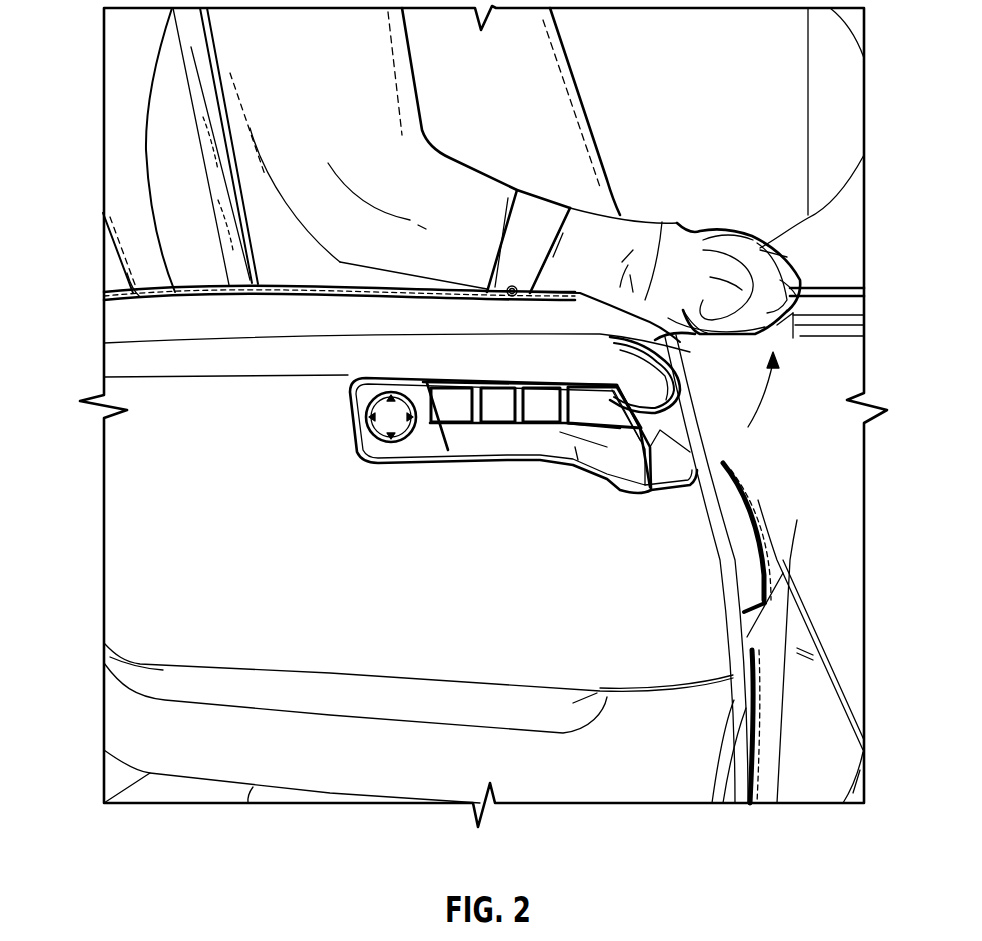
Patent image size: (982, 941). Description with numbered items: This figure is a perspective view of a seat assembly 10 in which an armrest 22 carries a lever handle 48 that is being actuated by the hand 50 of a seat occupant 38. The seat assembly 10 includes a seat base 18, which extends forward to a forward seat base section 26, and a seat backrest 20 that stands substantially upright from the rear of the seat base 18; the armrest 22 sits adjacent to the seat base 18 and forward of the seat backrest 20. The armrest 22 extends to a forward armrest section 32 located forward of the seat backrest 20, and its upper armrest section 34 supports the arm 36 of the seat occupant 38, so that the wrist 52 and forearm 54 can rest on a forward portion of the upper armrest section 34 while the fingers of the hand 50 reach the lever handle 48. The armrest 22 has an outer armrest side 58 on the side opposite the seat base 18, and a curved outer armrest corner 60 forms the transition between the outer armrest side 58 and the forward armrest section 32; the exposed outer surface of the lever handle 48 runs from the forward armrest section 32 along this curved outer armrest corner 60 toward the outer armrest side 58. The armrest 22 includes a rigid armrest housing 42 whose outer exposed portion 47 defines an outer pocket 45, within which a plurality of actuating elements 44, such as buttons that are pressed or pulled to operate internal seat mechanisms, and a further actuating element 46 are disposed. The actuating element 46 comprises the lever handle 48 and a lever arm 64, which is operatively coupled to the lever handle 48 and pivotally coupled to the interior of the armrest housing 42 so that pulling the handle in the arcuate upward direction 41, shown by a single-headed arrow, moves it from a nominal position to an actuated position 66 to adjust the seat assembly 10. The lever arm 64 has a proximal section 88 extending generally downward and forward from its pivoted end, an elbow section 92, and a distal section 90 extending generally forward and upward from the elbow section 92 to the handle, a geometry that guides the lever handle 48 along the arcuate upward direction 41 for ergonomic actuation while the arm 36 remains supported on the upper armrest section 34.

The seat assembly 10 is at (126, 129).
The seat base 18 is at (770, 543).
The seat backrest 20 is at (177, 103).
The armrest 22 is at (265, 358).
The forward seat base section 26 is at (773, 573).
The forward armrest section 32 is at (707, 427).
The upper armrest section 34 is at (283, 283).
The arm 36 is at (587, 227).
The seat occupant 38 is at (519, 192).
The arcuate upward direction 41 is at (768, 395).
The armrest housing 42 is at (681, 486).
The actuating elements 44 is at (500, 413).
The outer pocket 45 is at (617, 462).
The actuating element 46 is at (683, 392).
The outer exposed portion 47 is at (673, 453).
The lever handle 48 is at (735, 250).
The hand 50 is at (700, 226).
The wrist 52 is at (662, 222).
The forearm 54 is at (552, 290).
The outer armrest side 58 is at (173, 552).
The curved outer armrest corner 60 is at (692, 500).
The lever arm 64 is at (665, 312).
The actuated position 66 is at (668, 325).
The proximal section 88 is at (626, 398).
The distal section 90 is at (663, 380).
The elbow section 92 is at (632, 403).